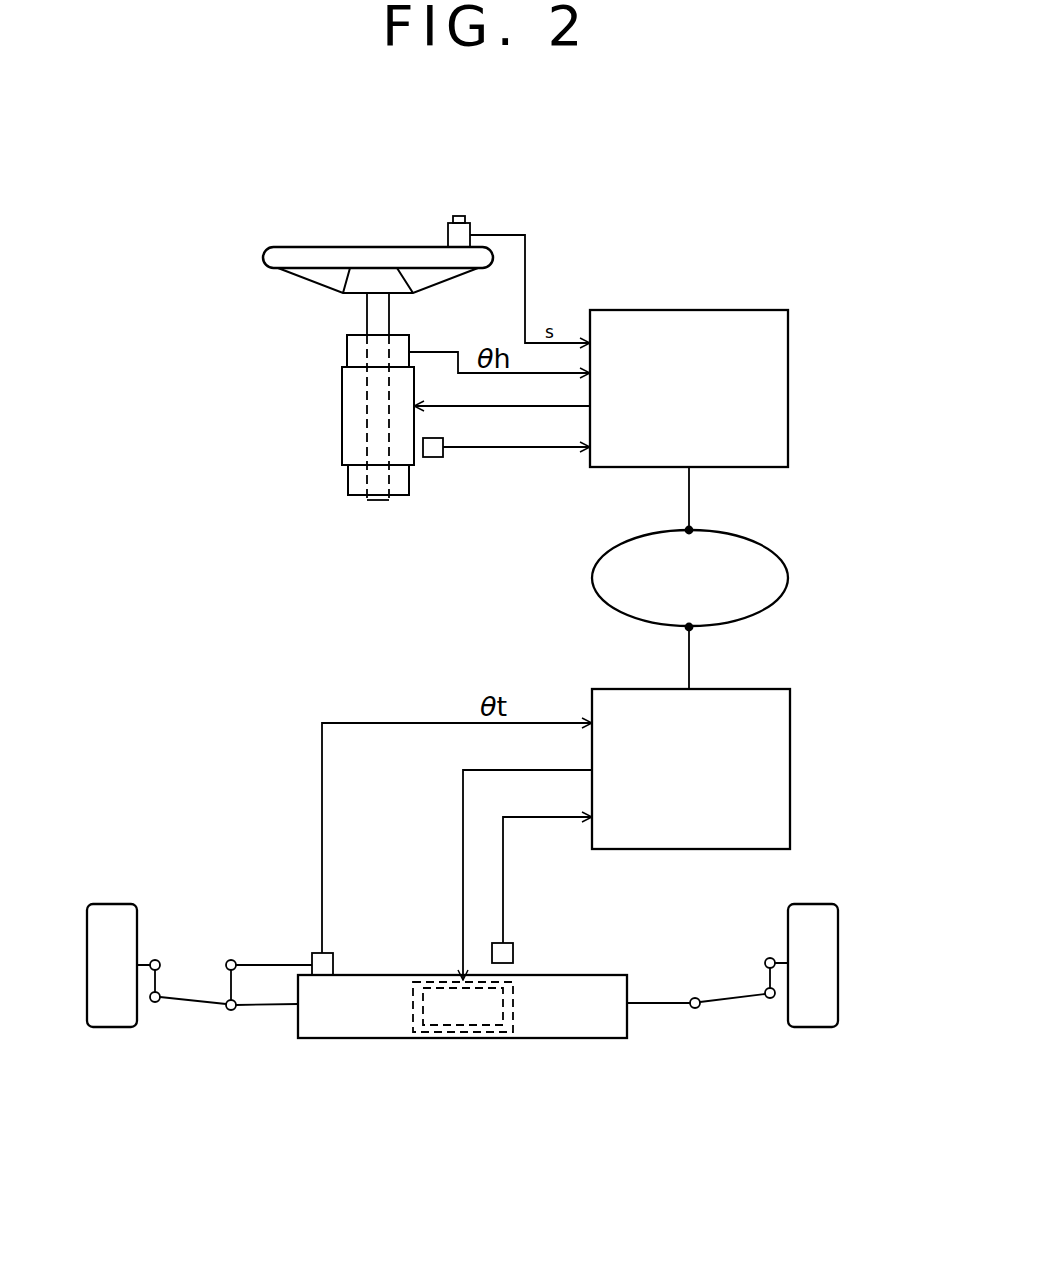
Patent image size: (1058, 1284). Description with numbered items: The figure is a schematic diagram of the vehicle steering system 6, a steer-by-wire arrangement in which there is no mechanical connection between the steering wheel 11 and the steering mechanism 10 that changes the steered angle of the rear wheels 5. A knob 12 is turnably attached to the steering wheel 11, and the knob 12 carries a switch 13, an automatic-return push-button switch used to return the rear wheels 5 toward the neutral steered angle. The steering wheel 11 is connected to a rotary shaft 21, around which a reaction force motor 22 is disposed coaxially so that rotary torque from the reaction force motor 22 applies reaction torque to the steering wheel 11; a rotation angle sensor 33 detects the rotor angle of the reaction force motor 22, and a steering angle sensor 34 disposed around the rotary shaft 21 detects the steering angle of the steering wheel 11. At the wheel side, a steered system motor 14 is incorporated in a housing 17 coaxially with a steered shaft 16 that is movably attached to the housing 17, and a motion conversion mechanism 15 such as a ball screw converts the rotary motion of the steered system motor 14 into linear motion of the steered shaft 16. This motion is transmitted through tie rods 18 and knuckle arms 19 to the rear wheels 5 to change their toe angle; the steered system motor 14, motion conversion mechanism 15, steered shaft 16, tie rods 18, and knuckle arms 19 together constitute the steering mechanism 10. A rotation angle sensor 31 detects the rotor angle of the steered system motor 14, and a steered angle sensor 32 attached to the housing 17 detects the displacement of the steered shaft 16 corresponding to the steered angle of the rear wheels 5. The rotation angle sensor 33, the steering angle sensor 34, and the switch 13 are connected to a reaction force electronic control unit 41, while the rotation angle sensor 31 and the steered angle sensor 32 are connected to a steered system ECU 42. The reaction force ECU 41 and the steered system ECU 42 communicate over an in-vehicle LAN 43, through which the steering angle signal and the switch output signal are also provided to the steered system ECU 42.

The rear wheels 5 is at (113, 1018).
The vehicle steering system 6 is at (594, 208).
The steering mechanism 10 is at (499, 1062).
The steering wheel 11 is at (306, 247).
The knob 12 is at (447, 236).
The switch 13 is at (461, 214).
The steered system motor 14 is at (413, 1005).
The motion conversion mechanism 15 is at (449, 1027).
The steered shaft 16 is at (265, 1006).
The housing 17 is at (588, 1040).
The tie rods 18 is at (186, 1003).
The knuckle arms 19 is at (161, 980).
The rotary shaft 21 is at (367, 318).
The reaction force motor 22 is at (342, 418).
The rotation angle sensor 31 is at (513, 953).
The steered angle sensor 32 is at (333, 963).
The rotation angle sensor 33 is at (432, 458).
The steering angle sensor 34 is at (347, 351).
The reaction force electronic control unit 41 is at (788, 385).
The steered system ECU 42 is at (790, 768).
The in-vehicle LAN 43 is at (788, 565).